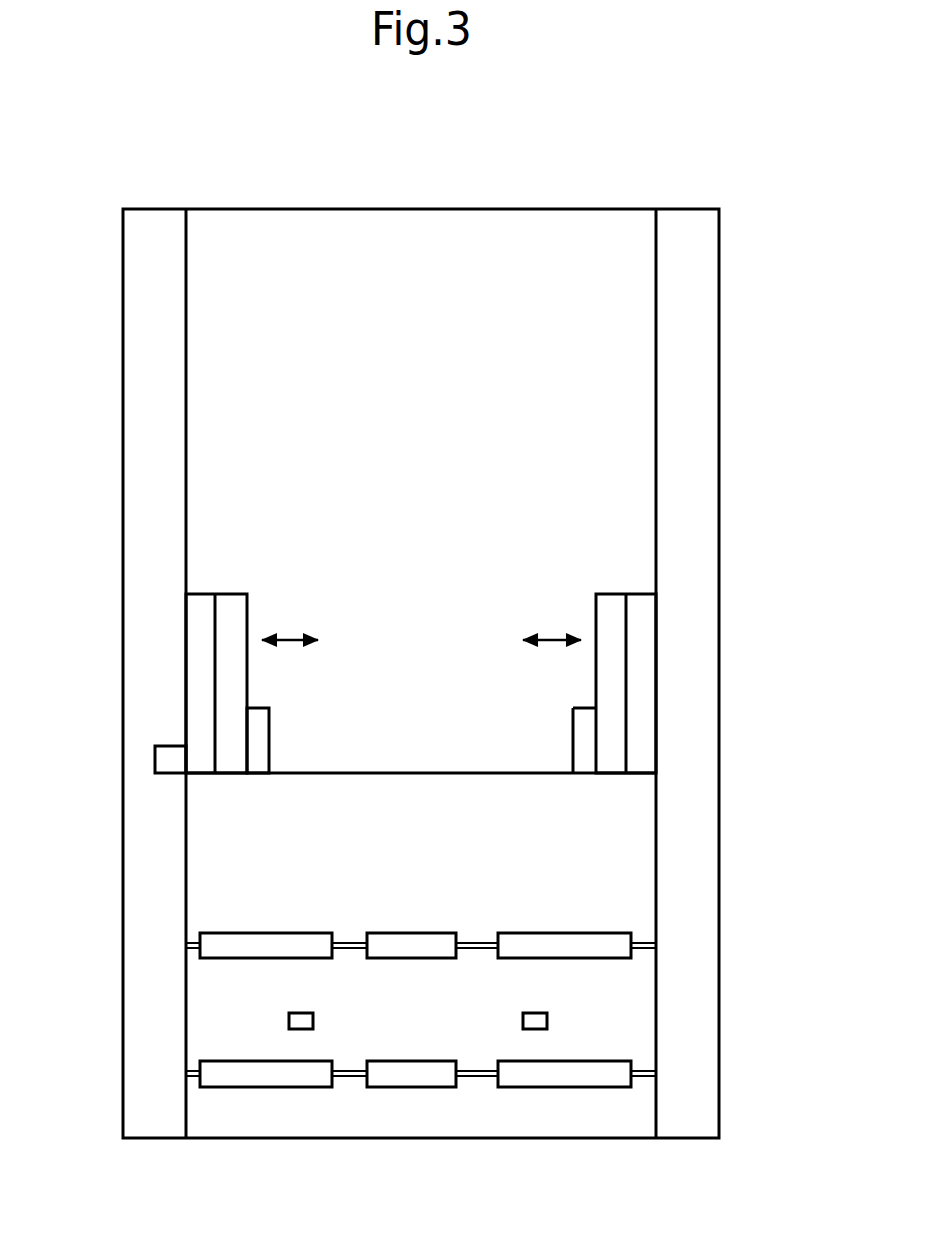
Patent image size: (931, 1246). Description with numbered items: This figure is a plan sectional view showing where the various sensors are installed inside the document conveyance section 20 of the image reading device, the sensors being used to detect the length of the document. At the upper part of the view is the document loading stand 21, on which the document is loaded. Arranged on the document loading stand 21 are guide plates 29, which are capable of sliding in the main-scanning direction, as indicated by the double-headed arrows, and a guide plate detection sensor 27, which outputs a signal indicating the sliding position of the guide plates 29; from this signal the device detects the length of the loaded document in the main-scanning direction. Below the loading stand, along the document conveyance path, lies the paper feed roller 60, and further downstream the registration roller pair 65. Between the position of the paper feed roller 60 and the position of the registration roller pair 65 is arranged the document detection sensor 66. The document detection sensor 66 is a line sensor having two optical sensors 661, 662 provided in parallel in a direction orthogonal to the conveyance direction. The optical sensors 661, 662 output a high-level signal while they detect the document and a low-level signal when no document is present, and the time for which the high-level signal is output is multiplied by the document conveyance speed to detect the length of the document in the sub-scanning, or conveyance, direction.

The document conveyance section 20 is at (724, 158).
The document loading stand 21 is at (480, 227).
The guide plate detection sensor 27 is at (168, 745).
The guide plates 29 is at (232, 593).
The paper feed roller 60 is at (240, 932).
The registration roller pair 65 is at (267, 1087).
The document detection sensor 66 is at (422, 1001).
The optical sensor 661 is at (288, 1028).
The optical sensor 662 is at (545, 1012).